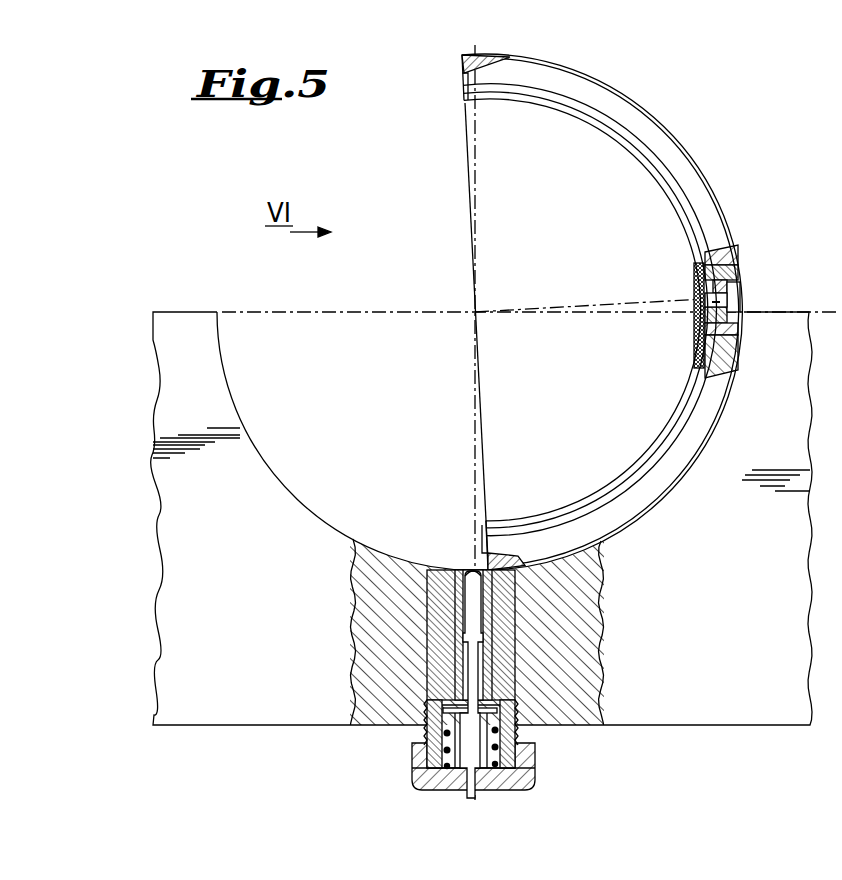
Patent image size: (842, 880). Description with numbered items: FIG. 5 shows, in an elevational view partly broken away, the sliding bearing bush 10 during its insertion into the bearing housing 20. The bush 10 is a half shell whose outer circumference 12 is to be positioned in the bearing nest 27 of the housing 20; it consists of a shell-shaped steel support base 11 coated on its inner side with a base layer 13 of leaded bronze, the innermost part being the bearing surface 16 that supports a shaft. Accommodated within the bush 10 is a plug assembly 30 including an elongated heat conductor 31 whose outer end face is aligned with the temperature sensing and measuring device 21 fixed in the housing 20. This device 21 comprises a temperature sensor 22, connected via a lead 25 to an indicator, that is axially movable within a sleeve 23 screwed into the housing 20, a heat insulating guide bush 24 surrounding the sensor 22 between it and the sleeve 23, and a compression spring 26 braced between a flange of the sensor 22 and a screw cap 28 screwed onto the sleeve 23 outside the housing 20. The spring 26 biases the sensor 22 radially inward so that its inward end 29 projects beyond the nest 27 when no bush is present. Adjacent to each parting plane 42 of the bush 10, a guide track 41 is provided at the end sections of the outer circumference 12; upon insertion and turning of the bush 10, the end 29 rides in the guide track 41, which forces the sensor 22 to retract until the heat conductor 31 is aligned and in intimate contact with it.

The plain bearing bush 10 is at (597, 311).
The support base 11 is at (715, 262).
The outer circumference 12 is at (718, 186).
The base layer 13 is at (706, 362).
The bearing surface 16 is at (651, 436).
The bearing housing 20 is at (213, 712).
The temperature sensing and measuring device 21 is at (445, 661).
The temperature sensor 22 is at (481, 600).
The sleeve 23 is at (508, 636).
The heat insulating guide bush 24 is at (490, 661).
The lead 25 is at (527, 780).
The compression spring 26 is at (515, 742).
The bearing nest 27 is at (300, 498).
The screw cap 28 is at (418, 779).
The inward end 29 is at (467, 568).
The plug assembly 30 is at (719, 306).
The heat conductor 31 is at (732, 300).
The guide track 41 is at (463, 62).
The parting plane 42 is at (464, 86).